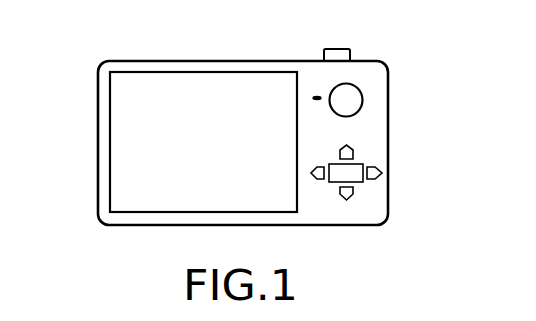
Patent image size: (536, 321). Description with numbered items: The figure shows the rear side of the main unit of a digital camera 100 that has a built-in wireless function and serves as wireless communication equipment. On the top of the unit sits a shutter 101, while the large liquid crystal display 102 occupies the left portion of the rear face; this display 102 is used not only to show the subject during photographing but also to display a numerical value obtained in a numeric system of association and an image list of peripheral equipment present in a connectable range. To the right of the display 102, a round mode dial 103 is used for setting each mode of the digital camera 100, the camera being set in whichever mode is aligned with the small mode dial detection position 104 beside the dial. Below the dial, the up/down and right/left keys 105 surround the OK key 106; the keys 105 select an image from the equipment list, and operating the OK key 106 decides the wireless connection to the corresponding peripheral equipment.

The digital camera 100 is at (97, 127).
The shutter 101 is at (334, 48).
The liquid crystal display 102 is at (132, 213).
The mode dial 103 is at (360, 88).
The mode dial detection position 104 is at (316, 96).
The up/down and right/left keys 105 is at (382, 173).
The OK key 106 is at (358, 182).